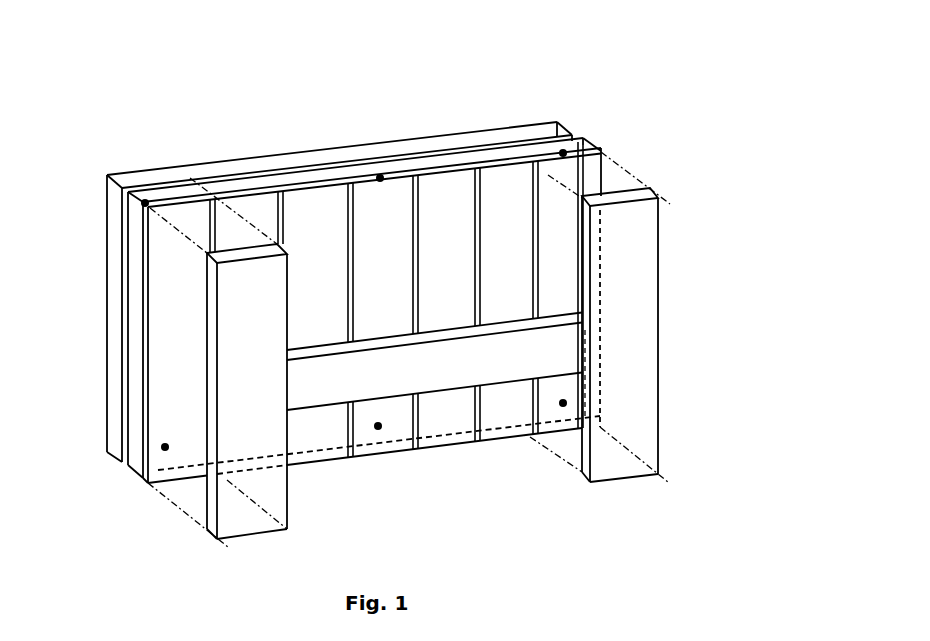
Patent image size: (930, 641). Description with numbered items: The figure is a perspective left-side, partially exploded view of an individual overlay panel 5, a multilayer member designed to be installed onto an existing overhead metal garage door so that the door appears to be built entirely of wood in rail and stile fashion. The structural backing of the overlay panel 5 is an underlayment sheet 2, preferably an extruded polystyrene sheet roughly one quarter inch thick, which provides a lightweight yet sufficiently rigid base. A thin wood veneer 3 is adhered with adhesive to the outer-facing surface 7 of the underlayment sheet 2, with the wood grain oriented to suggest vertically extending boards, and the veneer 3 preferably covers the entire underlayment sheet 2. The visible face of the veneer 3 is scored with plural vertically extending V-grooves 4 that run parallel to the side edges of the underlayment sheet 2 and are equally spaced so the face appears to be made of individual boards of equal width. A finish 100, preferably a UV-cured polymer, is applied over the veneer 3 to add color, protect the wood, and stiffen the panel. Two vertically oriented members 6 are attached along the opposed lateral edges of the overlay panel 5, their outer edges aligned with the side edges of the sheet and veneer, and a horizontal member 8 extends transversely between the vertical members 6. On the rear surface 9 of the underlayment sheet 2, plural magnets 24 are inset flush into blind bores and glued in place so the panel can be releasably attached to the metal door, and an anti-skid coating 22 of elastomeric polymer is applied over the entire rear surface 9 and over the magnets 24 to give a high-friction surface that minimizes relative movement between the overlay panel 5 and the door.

The underlayment sheet 2 is at (137, 232).
The wood veneer 3 is at (163, 297).
The V-grooves 4 is at (207, 217).
The overlay panel 5 is at (605, 102).
The vertical members 6 is at (250, 358).
The outer-facing surface 7 is at (138, 408).
The horizontal member 8 is at (435, 363).
The rear surface 9 is at (558, 120).
The anti-skid coating 22 is at (222, 168).
The magnets 24 is at (145, 200).
The finish 100 is at (517, 263).